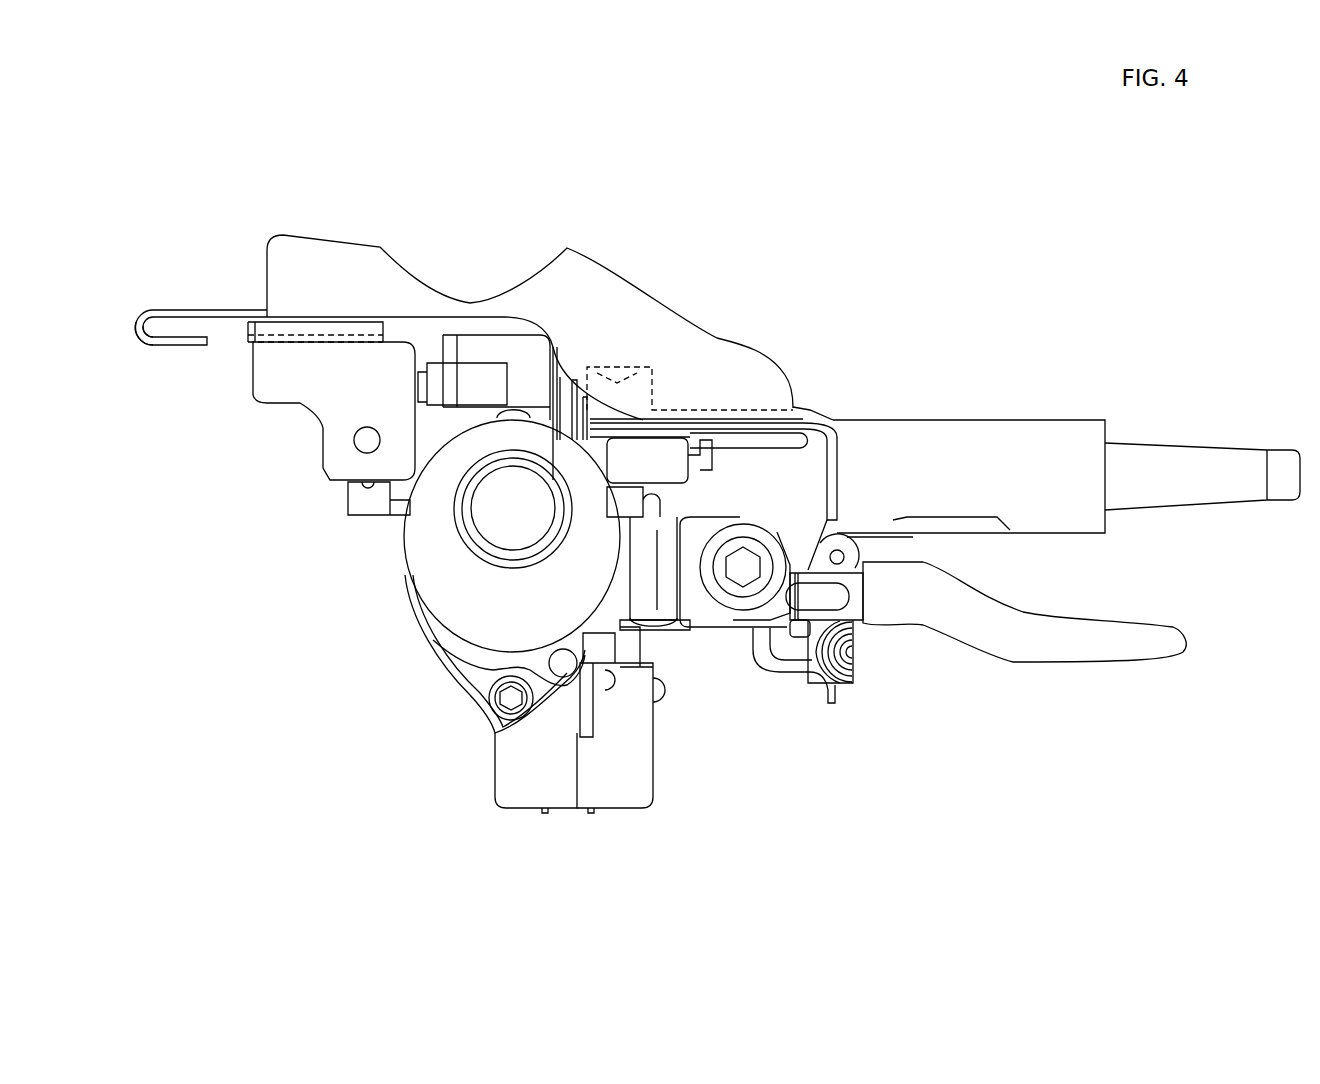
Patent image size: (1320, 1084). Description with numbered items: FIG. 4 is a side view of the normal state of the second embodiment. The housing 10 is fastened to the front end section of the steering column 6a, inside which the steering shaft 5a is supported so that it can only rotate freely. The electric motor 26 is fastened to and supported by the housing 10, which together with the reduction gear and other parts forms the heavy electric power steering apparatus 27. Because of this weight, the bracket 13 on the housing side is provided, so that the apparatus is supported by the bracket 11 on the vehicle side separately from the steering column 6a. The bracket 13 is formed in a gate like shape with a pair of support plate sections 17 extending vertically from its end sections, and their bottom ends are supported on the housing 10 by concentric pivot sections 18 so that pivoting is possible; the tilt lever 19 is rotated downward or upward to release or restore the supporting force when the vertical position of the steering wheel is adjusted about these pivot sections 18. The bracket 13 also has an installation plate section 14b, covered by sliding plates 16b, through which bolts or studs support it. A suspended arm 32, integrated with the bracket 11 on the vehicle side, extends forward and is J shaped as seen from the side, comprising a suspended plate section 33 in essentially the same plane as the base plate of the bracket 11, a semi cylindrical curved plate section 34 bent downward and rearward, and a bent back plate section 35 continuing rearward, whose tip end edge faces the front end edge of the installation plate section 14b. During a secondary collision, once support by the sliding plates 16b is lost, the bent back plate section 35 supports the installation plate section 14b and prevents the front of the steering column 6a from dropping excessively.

The steering shaft 5a is at (1173, 483).
The steering column 6a is at (937, 467).
The housing 10 is at (617, 767).
The bracket on the vehicle side 11 is at (295, 255).
The bracket on the housing side 13 is at (327, 375).
The installation plate section 14b is at (302, 328).
The sliding plate 16b is at (358, 315).
The support plate section 17 is at (287, 377).
The pivot section 18 is at (367, 440).
The tilt lever 19 is at (1040, 630).
The electric motor 26 is at (513, 505).
The electric power steering apparatus 27 is at (533, 773).
The suspended arm 32 is at (160, 315).
The suspended plate section 33 is at (205, 315).
The curved plate section 34 is at (137, 330).
The bent back plate section 35 is at (182, 340).